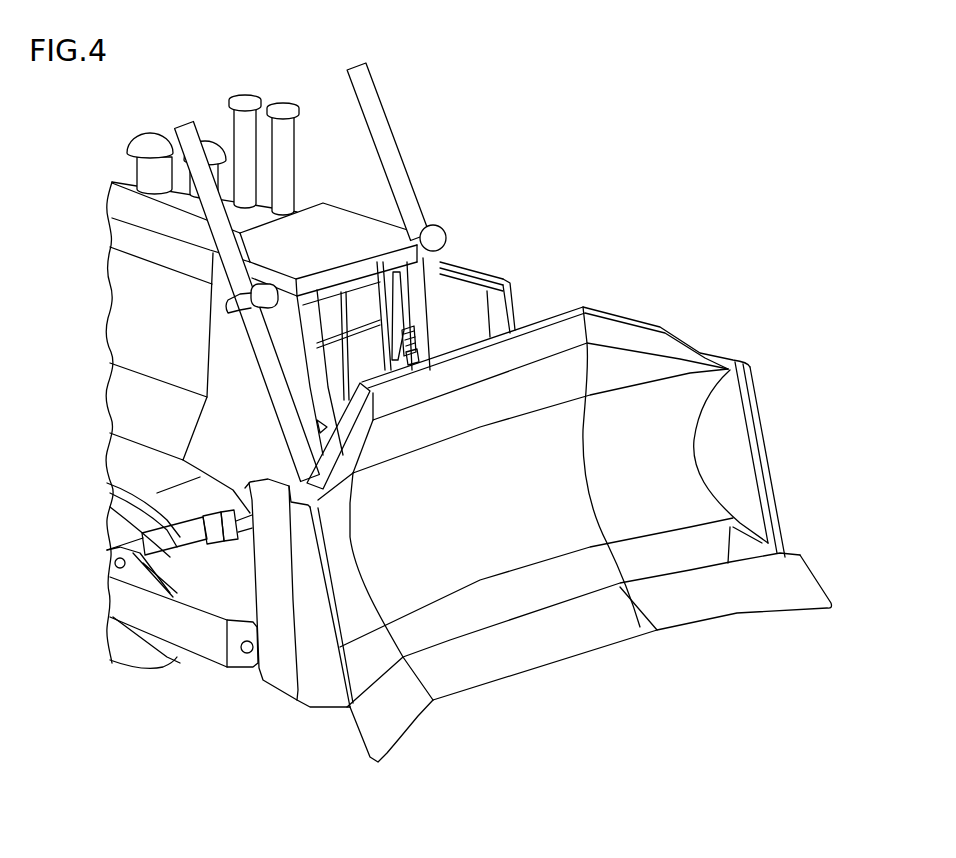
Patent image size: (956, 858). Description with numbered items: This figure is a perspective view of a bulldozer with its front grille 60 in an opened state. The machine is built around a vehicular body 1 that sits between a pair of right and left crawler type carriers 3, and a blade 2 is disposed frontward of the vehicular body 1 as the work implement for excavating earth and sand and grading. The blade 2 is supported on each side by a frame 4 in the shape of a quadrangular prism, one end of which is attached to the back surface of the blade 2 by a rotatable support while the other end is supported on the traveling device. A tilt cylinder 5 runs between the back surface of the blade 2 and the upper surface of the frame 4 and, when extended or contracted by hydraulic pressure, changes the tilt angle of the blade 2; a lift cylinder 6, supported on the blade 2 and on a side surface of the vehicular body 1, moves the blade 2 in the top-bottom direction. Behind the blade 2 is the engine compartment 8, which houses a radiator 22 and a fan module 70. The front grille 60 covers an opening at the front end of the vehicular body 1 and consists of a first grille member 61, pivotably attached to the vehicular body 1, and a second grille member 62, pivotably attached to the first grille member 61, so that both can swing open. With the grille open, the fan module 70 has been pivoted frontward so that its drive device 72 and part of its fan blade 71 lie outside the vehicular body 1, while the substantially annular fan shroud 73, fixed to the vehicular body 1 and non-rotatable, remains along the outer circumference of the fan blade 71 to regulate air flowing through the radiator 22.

The vehicular body 1 is at (135, 210).
The blade 2 is at (507, 597).
The crawler type carrier 3 is at (137, 470).
The frame 4 is at (170, 620).
The tilt cylinder 5 is at (148, 552).
The lift cylinder 6 is at (190, 140).
The engine compartment 8 is at (140, 296).
The radiator 22 is at (348, 313).
The front grille 60 is at (495, 278).
The first grille member 61 is at (487, 280).
The second grille member 62 is at (457, 270).
The fan module 70 is at (391, 338).
The fan blade 71 is at (407, 307).
The drive device 72 is at (360, 386).
The fan shroud 73 is at (323, 420).